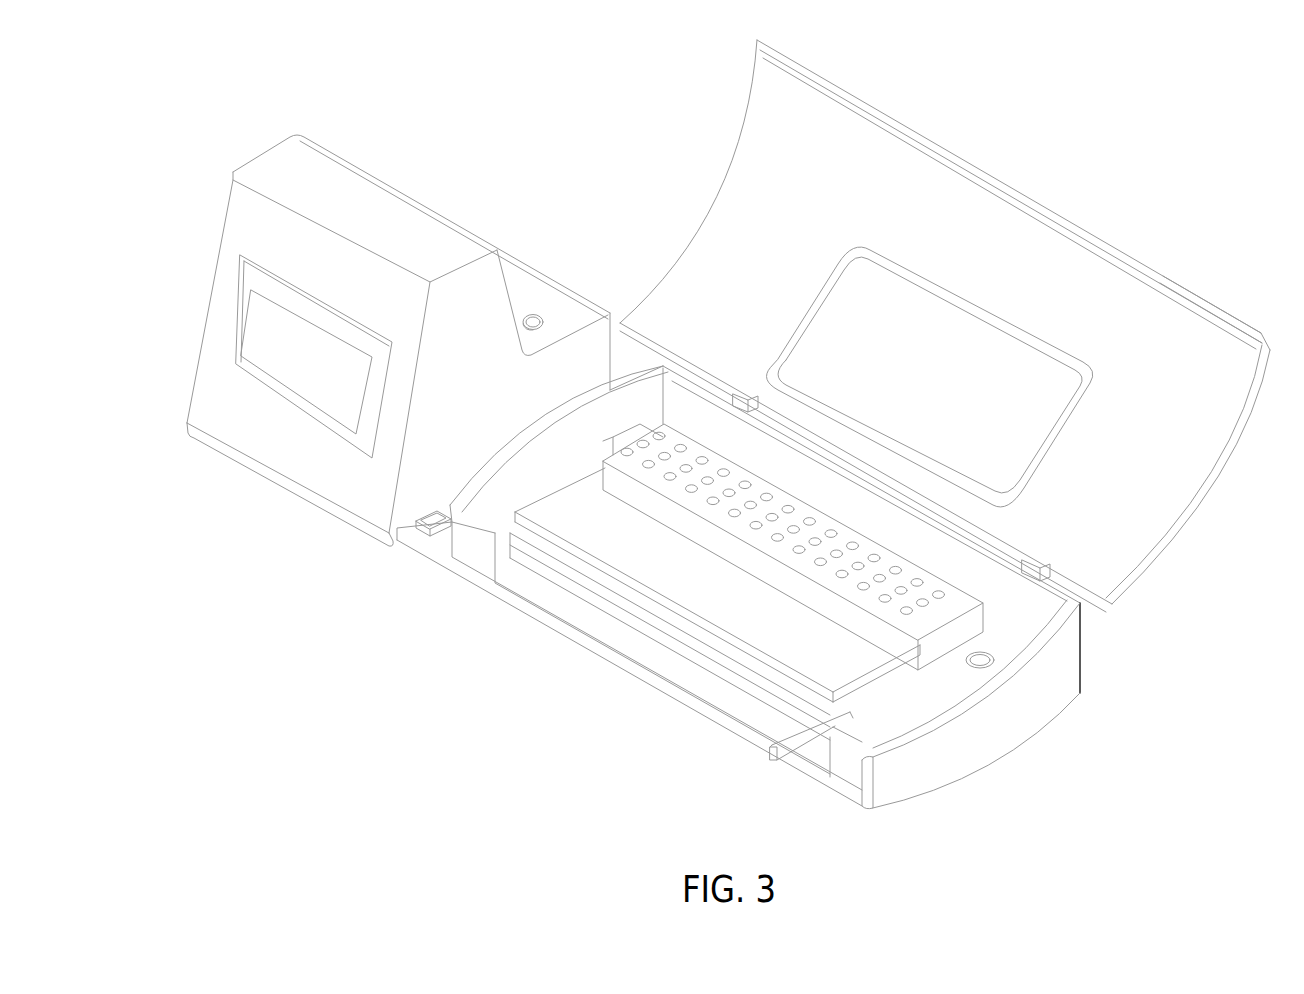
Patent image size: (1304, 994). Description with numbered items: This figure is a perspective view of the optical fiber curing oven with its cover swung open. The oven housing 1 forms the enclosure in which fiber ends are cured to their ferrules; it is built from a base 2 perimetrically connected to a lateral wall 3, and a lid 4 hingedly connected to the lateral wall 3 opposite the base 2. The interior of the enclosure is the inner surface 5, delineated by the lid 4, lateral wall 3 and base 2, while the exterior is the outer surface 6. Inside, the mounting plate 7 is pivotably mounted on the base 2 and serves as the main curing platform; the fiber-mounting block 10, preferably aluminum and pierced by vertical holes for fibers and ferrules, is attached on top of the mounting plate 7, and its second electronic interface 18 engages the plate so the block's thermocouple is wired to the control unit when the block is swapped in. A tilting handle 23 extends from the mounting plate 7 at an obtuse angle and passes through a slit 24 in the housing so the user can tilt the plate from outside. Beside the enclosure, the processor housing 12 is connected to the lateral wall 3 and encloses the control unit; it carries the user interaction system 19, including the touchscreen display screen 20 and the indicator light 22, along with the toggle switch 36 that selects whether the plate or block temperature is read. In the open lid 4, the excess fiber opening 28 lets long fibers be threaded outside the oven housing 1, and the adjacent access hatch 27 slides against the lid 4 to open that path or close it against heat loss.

The oven housing 1 is at (1063, 202).
The base 2 is at (627, 656).
The lateral wall 3 is at (1060, 705).
The lid 4 is at (702, 216).
The inner surface 5 is at (681, 393).
The outer surface 6 is at (1013, 745).
The mounting plate 7 is at (571, 485).
The fiber-mounting block 10 is at (670, 522).
The processor housing 12 is at (372, 178).
The second electronic interface 18 is at (623, 436).
The user interaction system 19 is at (228, 318).
The display screen 20 is at (292, 413).
The indicator light 22 is at (538, 326).
The tilting handle 23 is at (772, 756).
The slit 24 is at (1162, 273).
The access hatch 27 is at (1042, 476).
The excess fiber opening 28 is at (885, 268).
The toggle switch 36 is at (423, 533).